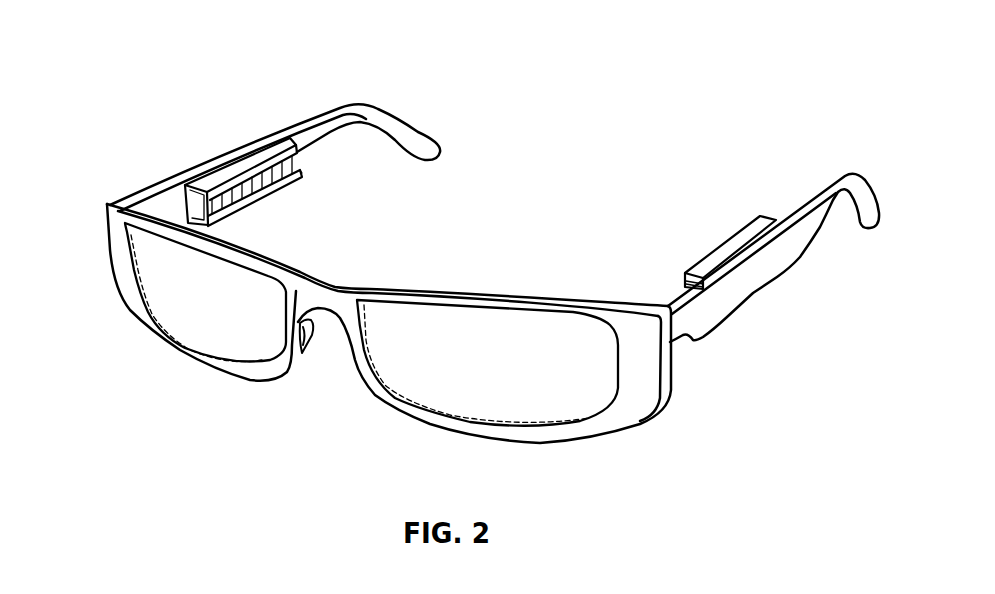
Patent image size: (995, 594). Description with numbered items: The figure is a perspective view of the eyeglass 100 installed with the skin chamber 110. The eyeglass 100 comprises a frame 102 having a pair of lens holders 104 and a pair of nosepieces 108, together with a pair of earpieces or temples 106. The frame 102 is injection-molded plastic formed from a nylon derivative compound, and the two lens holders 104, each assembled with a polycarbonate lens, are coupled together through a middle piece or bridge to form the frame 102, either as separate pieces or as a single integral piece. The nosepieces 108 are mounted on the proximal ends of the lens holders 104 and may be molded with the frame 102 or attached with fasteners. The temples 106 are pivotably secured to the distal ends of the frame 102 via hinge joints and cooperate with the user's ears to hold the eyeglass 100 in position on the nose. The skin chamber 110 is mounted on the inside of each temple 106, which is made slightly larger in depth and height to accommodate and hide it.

The eyeglass 100 is at (166, 56).
The frame 102 is at (110, 242).
The lens holders 104 is at (217, 337).
The temples 106 is at (760, 275).
The nosepieces 108 is at (308, 340).
The skin chamber 110 is at (240, 163).